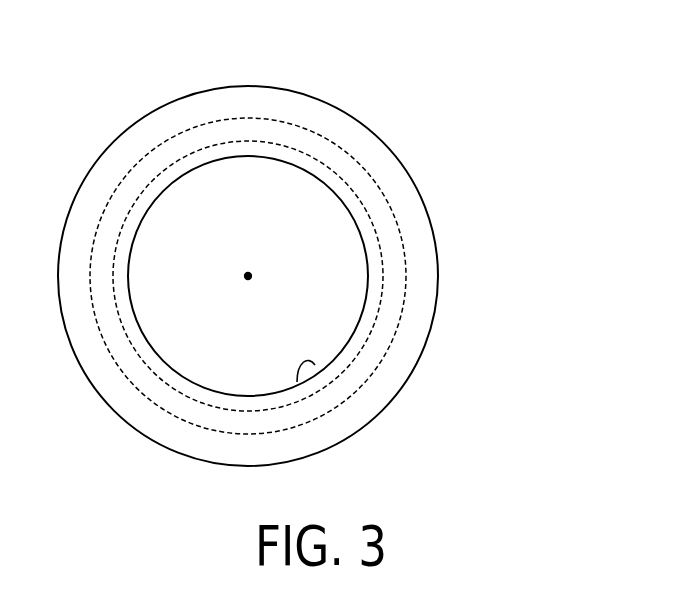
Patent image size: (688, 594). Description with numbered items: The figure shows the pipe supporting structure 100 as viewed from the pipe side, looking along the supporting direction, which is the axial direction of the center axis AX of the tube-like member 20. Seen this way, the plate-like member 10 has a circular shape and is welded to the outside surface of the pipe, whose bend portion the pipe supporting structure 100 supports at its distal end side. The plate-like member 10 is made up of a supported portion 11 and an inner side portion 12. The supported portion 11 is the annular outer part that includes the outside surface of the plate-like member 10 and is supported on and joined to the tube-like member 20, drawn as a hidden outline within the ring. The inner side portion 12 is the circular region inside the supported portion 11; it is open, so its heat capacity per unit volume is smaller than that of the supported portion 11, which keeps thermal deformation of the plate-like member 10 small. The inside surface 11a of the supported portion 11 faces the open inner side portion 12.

The pipe supporting structure 100 is at (321, 244).
The plate-like member 10 is at (187, 98).
The supported portion 11 is at (283, 102).
The inside surface 11a is at (315, 365).
The inner side portion 12 is at (318, 315).
The tube-like member 20 is at (383, 190).
The center axis AX is at (255, 273).